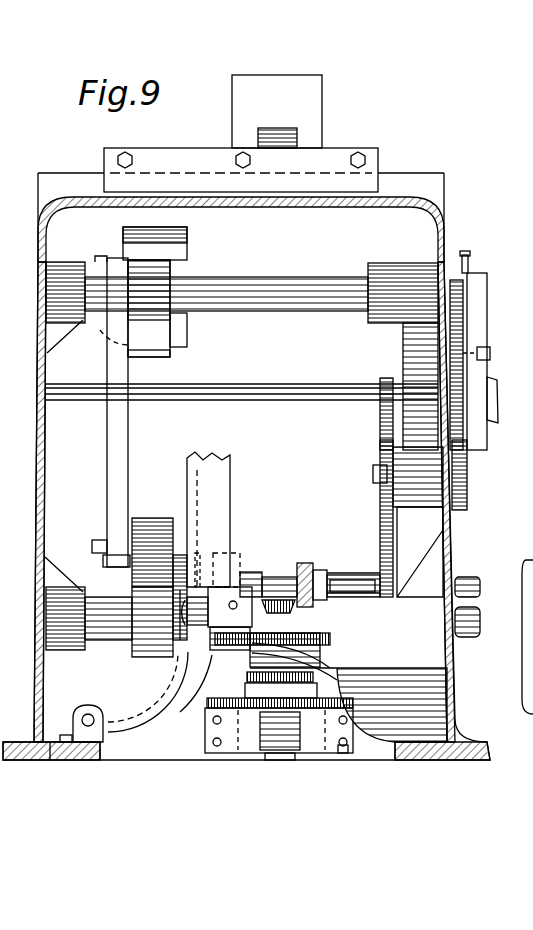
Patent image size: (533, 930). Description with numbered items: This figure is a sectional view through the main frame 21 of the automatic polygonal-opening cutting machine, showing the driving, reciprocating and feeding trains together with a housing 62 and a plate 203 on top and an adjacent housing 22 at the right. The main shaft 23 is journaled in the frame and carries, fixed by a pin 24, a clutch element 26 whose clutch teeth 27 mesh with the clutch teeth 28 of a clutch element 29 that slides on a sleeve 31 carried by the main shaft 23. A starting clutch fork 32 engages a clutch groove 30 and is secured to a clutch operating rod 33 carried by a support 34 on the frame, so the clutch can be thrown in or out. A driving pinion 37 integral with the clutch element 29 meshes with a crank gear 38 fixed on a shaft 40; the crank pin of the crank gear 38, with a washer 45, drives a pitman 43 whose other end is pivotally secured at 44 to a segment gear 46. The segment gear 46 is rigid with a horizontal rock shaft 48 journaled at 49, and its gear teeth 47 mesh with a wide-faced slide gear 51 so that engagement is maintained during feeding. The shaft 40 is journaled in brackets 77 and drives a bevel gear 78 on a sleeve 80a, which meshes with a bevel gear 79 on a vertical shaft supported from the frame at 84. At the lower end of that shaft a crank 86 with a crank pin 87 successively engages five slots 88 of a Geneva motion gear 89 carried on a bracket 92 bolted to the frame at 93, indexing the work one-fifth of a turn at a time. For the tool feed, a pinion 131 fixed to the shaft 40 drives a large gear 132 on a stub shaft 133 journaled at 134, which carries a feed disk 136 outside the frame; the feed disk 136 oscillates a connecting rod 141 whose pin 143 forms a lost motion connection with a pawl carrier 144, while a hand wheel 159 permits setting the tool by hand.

The main frame 21 is at (343, 207).
The adjacent housing 22 is at (525, 742).
The main shaft 23 is at (470, 632).
The pin 24 is at (236, 600).
The clutch element 26 is at (235, 640).
The clutch teeth 27 is at (213, 575).
The clutch teeth 28 is at (215, 595).
The clutch element 29 is at (181, 555).
The clutch groove 30 is at (200, 553).
The sleeve 31 is at (120, 640).
The starting clutch fork 32 is at (170, 712).
The clutch operating rod 33 is at (98, 712).
The support 34 is at (82, 750).
The driving pinion 37 is at (148, 657).
The crank gear 38 is at (150, 518).
The shaft 40 is at (280, 577).
The pitman 43 is at (110, 405).
The pivotal connection 44 is at (100, 256).
The washer 45 is at (103, 540).
The segment gear 46 is at (170, 335).
The gear teeth 47 is at (160, 352).
The rock shaft 48 is at (265, 283).
The journal 49 is at (60, 292).
The slide gear 51 is at (188, 245).
The housing 62 is at (323, 102).
The brackets 77 is at (225, 455).
The bevel gear 78 is at (307, 567).
The bevel gear 79 is at (300, 608).
The sleeve 80a is at (332, 577).
The shaft support location 84 is at (420, 668).
The crank 86 is at (247, 677).
The crank pin 87 is at (279, 725).
The slots 88 is at (322, 680).
The Geneva motion gear 89 is at (291, 731).
The bracket 92 is at (275, 755).
The bolting location 93 is at (345, 748).
The pinion 131 is at (337, 580).
The large gear 132 is at (380, 437).
The stub shaft 133 is at (432, 488).
The journal 134 is at (425, 450).
The feed disk 136 is at (467, 497).
The connecting rod 141 is at (478, 340).
The pin 143 is at (490, 355).
The pawl carrier 144 is at (468, 322).
The hand wheel 159 is at (497, 392).
The plate 203 is at (372, 160).